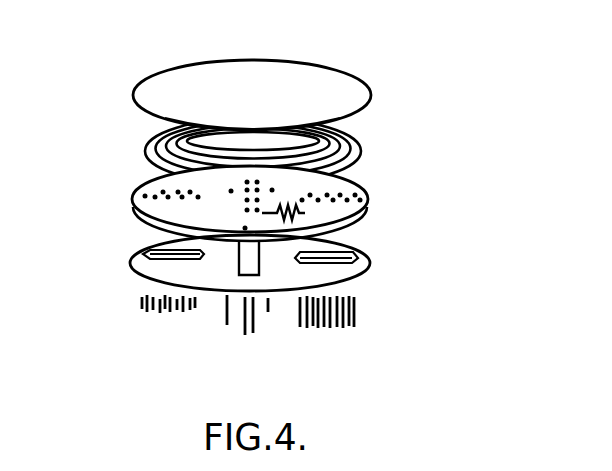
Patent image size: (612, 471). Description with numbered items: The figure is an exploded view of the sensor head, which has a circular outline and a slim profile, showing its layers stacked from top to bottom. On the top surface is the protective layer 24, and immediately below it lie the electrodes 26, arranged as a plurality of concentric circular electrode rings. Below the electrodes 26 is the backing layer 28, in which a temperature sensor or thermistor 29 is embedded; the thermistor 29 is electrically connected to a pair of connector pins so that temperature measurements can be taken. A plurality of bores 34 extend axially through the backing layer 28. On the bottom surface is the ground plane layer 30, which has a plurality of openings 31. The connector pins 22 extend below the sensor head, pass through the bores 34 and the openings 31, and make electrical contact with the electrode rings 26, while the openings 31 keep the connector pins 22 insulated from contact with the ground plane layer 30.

The connector pins 22 is at (360, 318).
The protective layer 24 is at (341, 74).
The electrodes 26 is at (378, 117).
The backing layer 28 is at (372, 195).
The thermistor 29 is at (305, 215).
The ground plane layer 30 is at (377, 243).
The openings 31 is at (150, 256).
The bores 34 is at (152, 188).